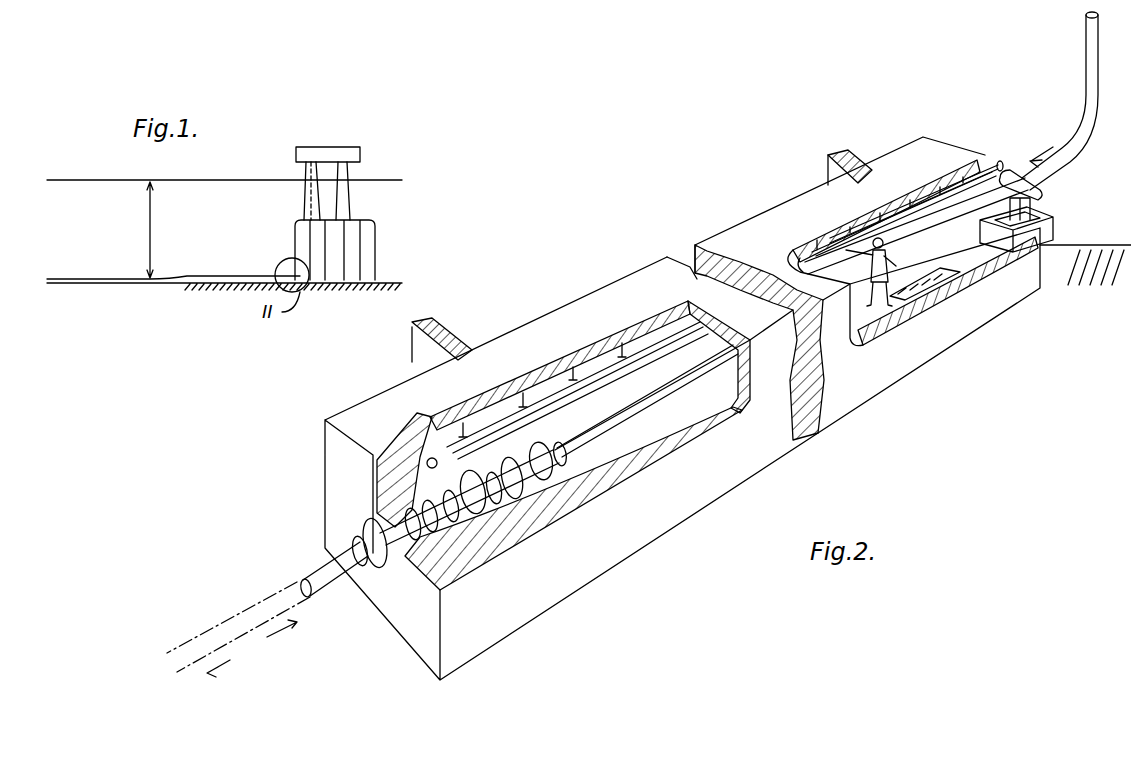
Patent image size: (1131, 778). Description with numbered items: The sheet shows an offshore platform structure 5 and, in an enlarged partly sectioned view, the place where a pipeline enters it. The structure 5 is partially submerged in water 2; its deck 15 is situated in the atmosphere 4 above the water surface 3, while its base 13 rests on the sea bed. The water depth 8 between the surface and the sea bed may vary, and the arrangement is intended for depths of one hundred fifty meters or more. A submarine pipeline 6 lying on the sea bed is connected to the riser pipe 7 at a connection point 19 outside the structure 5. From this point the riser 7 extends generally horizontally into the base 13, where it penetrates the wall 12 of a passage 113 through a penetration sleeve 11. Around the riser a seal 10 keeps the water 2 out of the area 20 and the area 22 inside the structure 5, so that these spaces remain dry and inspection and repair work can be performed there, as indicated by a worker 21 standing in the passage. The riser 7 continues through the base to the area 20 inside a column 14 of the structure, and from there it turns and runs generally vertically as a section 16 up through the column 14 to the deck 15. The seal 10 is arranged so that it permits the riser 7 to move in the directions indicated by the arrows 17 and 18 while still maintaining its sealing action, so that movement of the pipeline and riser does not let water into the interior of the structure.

In FIG. 1, the water 2 is at (98, 240).
In FIG. 1, the water surface 3 is at (88, 180).
In FIG. 1, the atmosphere 4 is at (232, 166).
In FIG. 1, the structure 5 is at (375, 232).
In FIG. 2, the structure 5 is at (410, 352).
In FIG. 1, the submarine pipeline 6 is at (222, 276).
In FIG. 2, the submarine pipeline 6 is at (225, 615).
In FIG. 2, the riser pipe 7 is at (636, 398).
In FIG. 1, the water depth 8 is at (157, 230).
In FIG. 2, the seal 10 is at (540, 470).
In FIG. 2, the penetration sleeve 11 is at (416, 566).
In FIG. 2, the wall 12 is at (400, 478).
In FIG. 1, the base 13 is at (378, 276).
In FIG. 2, the base 13 is at (1080, 250).
In FIG. 1, the column 14 is at (303, 173).
In FIG. 2, the column 14 is at (828, 175).
In FIG. 1, the deck 15 is at (328, 152).
In FIG. 1, the vertical section of riser 16 is at (308, 204).
In FIG. 2, the vertical section of riser 16 is at (1087, 45).
In FIG. 2, the arrow 17 is at (635, 403).
In FIG. 2, the arrow 18 is at (282, 638).
In FIG. 2, the connection point 19 is at (302, 580).
In FIG. 2, the area inside column 20 is at (640, 394).
In FIG. 2, the worker 21 is at (905, 290).
In FIG. 2, the area inside structure 22 is at (1128, 106).
In FIG. 2, the passage 113 is at (552, 320).